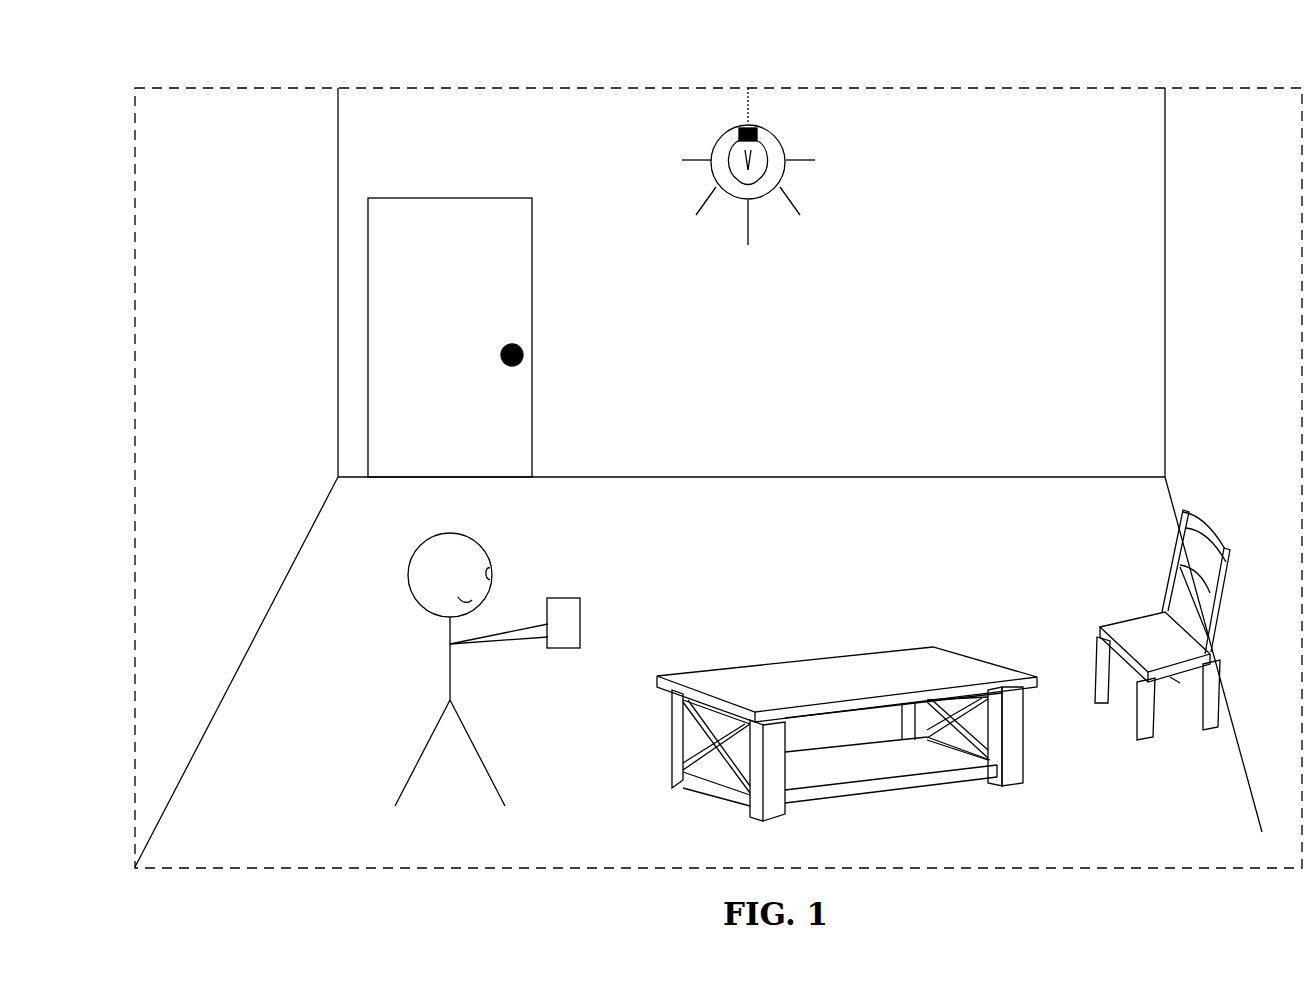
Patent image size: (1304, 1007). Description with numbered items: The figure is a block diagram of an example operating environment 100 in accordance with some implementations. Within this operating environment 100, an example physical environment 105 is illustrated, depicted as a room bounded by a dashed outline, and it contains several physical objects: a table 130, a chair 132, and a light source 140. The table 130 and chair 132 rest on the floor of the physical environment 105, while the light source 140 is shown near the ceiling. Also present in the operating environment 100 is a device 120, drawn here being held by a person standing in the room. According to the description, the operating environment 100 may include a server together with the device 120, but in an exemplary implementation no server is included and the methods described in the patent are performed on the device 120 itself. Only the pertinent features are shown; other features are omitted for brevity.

The operating environment 100 is at (234, 44).
The physical environment 105 is at (230, 178).
The device 120 is at (580, 622).
The table 130 is at (937, 673).
The chair 132 is at (1197, 527).
The light source 140 is at (773, 150).